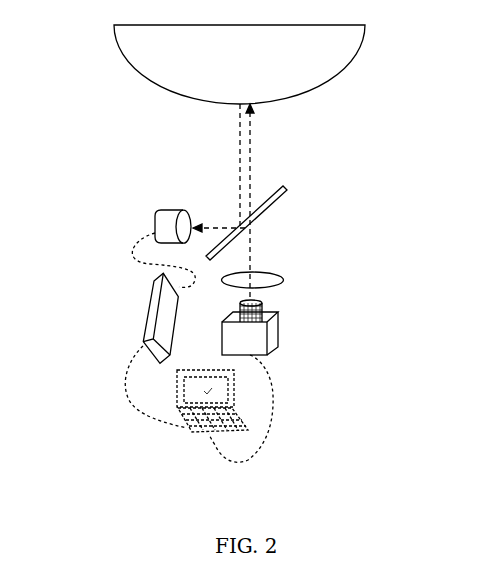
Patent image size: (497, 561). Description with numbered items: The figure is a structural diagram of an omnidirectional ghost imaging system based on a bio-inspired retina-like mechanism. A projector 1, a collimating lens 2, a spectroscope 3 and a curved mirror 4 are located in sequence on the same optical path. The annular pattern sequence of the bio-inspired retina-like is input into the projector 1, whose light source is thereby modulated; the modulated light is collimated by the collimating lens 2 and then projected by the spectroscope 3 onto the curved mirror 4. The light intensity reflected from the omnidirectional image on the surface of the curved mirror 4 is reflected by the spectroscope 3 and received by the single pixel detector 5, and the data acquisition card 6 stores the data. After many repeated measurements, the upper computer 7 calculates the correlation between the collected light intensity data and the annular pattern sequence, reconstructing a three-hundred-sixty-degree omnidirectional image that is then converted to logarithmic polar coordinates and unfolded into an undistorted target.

The projector 1 is at (279, 326).
The collimating lens 2 is at (283, 278).
The spectroscope 3 is at (270, 206).
The curved mirror 4 is at (349, 63).
The single pixel detector 5 is at (157, 216).
The data acquisition card 6 is at (148, 312).
The upper computer 7 is at (198, 435).